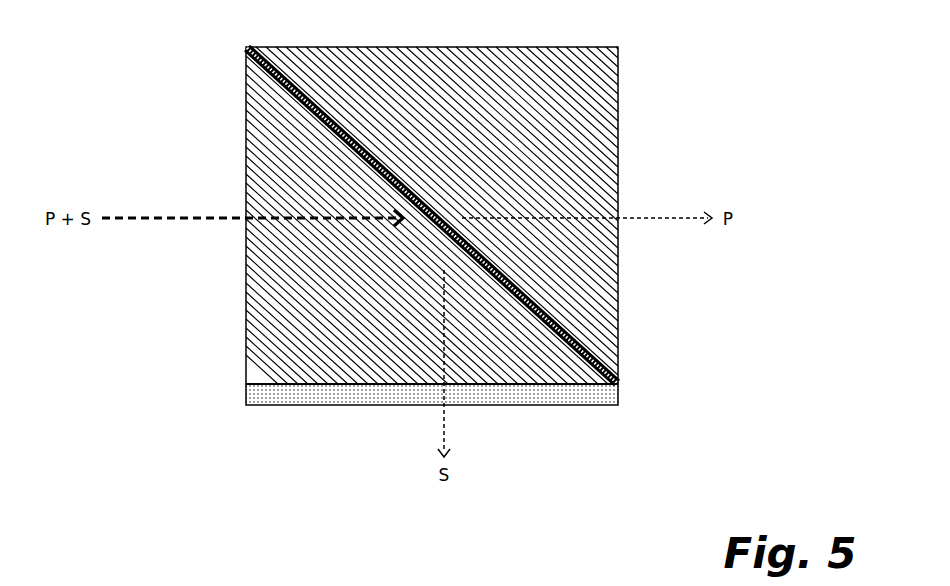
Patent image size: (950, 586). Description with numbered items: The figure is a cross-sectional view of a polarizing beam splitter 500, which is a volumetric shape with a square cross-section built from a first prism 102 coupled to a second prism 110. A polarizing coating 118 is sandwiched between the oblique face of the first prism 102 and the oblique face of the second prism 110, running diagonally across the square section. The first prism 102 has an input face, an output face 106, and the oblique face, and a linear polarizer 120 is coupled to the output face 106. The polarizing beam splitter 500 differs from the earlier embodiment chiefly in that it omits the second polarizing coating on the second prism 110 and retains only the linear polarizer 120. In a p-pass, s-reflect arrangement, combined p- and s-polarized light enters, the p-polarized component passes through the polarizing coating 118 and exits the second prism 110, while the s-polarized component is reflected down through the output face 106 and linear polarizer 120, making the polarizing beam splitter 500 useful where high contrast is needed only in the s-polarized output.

The polarizing beam splitter 500 is at (130, 500).
The second prism 110 is at (578, 99).
The first prism 102 is at (287, 357).
The polarizing coating 118 is at (249, 50).
The output face 106 is at (278, 385).
The linear polarizer 120 is at (368, 396).